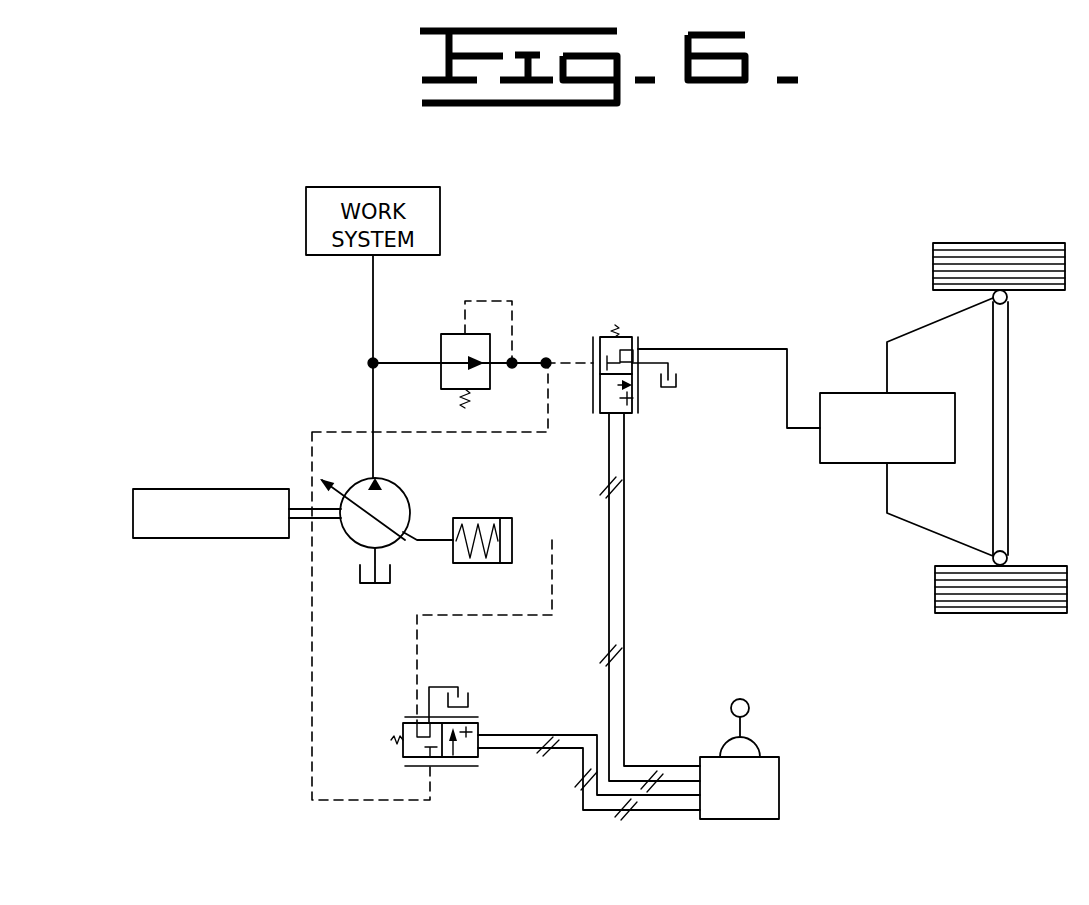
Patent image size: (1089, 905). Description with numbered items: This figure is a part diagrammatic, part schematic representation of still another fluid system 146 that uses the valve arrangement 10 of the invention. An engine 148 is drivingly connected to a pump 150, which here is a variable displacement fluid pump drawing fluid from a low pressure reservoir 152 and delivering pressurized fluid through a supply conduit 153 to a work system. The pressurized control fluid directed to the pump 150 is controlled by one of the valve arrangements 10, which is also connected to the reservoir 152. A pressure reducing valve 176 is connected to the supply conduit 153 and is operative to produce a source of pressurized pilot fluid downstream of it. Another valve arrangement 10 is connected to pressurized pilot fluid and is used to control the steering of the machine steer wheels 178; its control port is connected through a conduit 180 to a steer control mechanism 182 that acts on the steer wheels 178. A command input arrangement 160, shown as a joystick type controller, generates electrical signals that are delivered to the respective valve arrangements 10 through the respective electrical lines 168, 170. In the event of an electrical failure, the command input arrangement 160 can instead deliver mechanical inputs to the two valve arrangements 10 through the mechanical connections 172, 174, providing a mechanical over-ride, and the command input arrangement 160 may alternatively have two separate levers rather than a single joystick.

The valve arrangement 10 is at (652, 290).
The fluid system 146 is at (228, 208).
The engine 148 is at (133, 510).
The pump 150 is at (405, 488).
The reservoir 152 is at (358, 575).
The supply conduit 153 is at (373, 305).
The command input arrangement 160 is at (768, 795).
The electrical line 168 is at (605, 520).
The electrical line 170 is at (650, 812).
The mechanical connection 172 is at (624, 560).
The mechanical connection 174 is at (582, 735).
The pressure reducing valve 176 is at (455, 334).
The steer wheels 178 is at (903, 248).
The conduit 180 is at (707, 349).
The steer control mechanism 182 is at (862, 393).